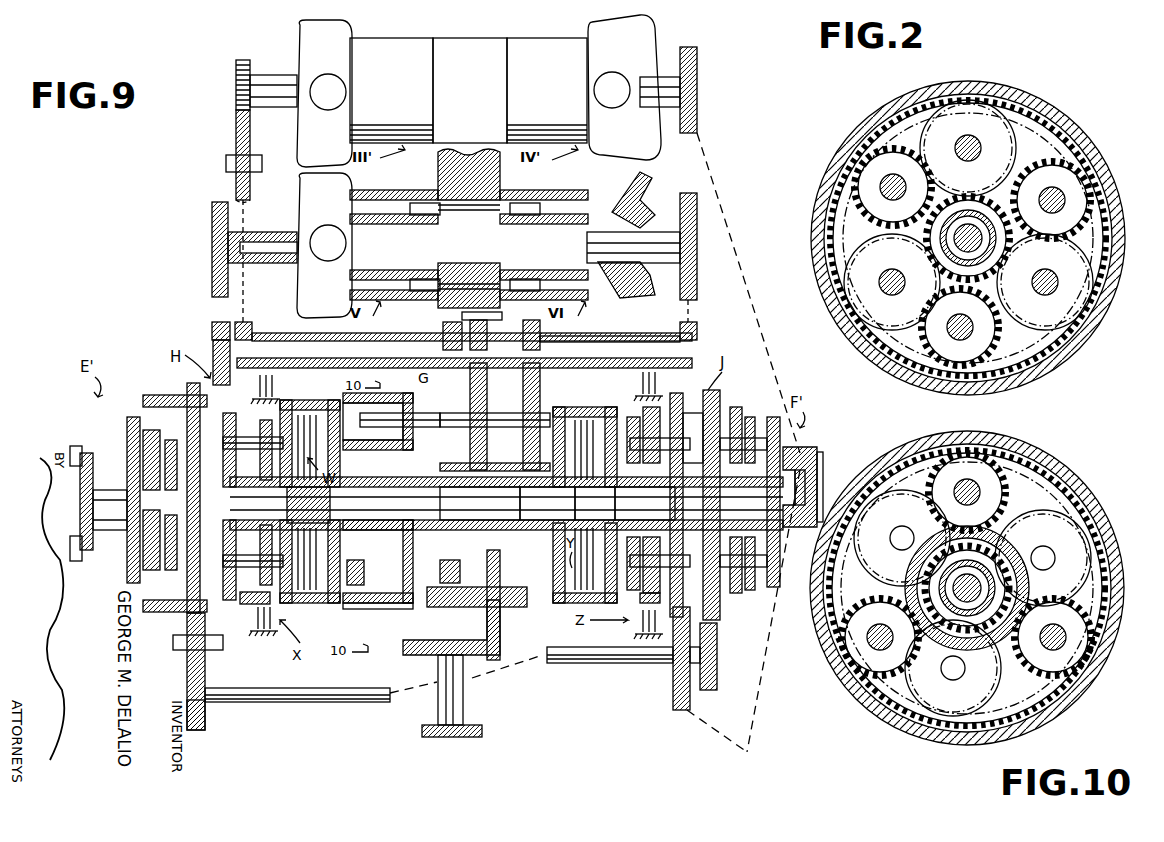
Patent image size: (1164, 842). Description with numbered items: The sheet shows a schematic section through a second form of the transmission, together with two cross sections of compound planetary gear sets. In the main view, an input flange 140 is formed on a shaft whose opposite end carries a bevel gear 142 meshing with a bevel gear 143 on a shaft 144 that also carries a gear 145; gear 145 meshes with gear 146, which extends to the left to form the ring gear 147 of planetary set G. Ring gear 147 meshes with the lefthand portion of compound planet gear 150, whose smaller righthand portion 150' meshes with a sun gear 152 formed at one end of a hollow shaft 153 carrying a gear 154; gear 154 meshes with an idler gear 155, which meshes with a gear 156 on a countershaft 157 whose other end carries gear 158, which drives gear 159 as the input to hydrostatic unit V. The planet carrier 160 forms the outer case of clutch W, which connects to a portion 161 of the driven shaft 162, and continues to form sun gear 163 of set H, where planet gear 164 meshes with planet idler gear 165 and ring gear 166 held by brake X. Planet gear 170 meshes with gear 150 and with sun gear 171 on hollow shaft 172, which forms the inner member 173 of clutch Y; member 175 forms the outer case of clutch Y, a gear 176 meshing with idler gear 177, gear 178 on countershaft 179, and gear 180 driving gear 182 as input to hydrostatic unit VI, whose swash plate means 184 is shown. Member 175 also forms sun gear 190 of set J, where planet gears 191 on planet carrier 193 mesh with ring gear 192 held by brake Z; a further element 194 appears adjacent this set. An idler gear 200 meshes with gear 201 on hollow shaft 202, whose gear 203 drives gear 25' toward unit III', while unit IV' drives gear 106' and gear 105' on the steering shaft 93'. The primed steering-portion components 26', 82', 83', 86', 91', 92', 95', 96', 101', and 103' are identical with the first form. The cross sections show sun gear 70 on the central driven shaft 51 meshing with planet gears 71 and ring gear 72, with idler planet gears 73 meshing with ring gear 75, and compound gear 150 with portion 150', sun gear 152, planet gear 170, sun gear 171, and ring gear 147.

In FIG. 9, the gear 26' is at (243, 71).
In FIG. 9, the gear 25' is at (225, 156).
In FIG. 9, the gear 106' is at (694, 90).
In FIG. 9, the gear 159 is at (212, 240).
In FIG. 9, the gear 182 is at (697, 255).
In FIG. 9, the swash plate means 184 is at (620, 283).
In FIG. 9, the gear 158 is at (212, 330).
In FIG. 9, the gear 203 is at (252, 325).
In FIG. 9, the countershaft 157 is at (320, 335).
In FIG. 9, the hollow shaft 202 is at (382, 333).
In FIG. 9, the gear 201 is at (480, 318).
In FIG. 9, the gear 156 is at (493, 335).
In FIG. 9, the gear 178 is at (540, 333).
In FIG. 9, the countershaft 179 is at (605, 340).
In FIG. 9, the gear 180 is at (697, 330).
In FIG. 9, the hollow shaft 153 is at (427, 478).
In FIG. 9, the driven shaft 162 is at (480, 503).
In FIG. 9, the hollow shaft 172 is at (547, 503).
In FIG. 9, the inner member of clutch Y 173 is at (595, 503).
In FIG. 9, the sun gear 190 is at (645, 503).
In FIG. 9, the end plate 96' is at (735, 502).
In FIG. 9, the output coupling 101' is at (809, 475).
In FIG. 9, the output shaft end 95' is at (840, 478).
In FIG. 9, the clutch plate 86' is at (124, 500).
In FIG. 9, the input shaft 83' is at (104, 501).
In FIG. 9, the shaft end 82' is at (91, 509).
In FIG. 9, the planet idler gear 165 is at (228, 418).
In FIG. 9, the sun gear 163 is at (258, 455).
In FIG. 9, the planet gear 164 is at (238, 540).
In FIG. 9, the ring gear 166 is at (240, 597).
In FIG. 9, the planet carrier 160 is at (300, 402).
In FIG. 9, the planet gear 170 is at (350, 545).
In FIG. 10, the planet gear 170 is at (1072, 558).
In FIG. 9, the portion of driven shaft 161 is at (324, 505).
In FIG. 9, the sun gear 171 is at (365, 520).
In FIG. 10, the sun gear 171 is at (905, 588).
In FIG. 9, the compound planet gear 150 is at (364, 413).
In FIG. 10, the compound planet gear 150 is at (987, 598).
In FIG. 9, the smaller righthand portion of compound planet gear 150' is at (398, 414).
In FIG. 10, the smaller righthand portion of compound planet gear 150' is at (902, 534).
In FIG. 9, the idler gear 200 is at (400, 428).
In FIG. 9, the sun gear 152 is at (378, 581).
In FIG. 10, the sun gear 152 is at (1020, 535).
In FIG. 9, the ring gear 147 is at (350, 606).
In FIG. 10, the ring gear 147 is at (1025, 448).
In FIG. 9, the idler gear 155 is at (487, 382).
In FIG. 9, the gear 176 is at (520, 455).
In FIG. 9, the gear 154 is at (495, 471).
In FIG. 9, the idler gear 177 is at (540, 388).
In FIG. 9, the member 175 is at (575, 407).
In FIG. 9, the clutch plate 194 is at (660, 425).
In FIG. 9, the planet carrier 193 is at (683, 462).
In FIG. 9, the planet gears 191 is at (665, 545).
In FIG. 9, the ring gear 192 is at (660, 596).
In FIG. 9, the gear 146 is at (460, 565).
In FIG. 9, the gear 145 is at (450, 608).
In FIG. 9, the shaft 144 is at (500, 612).
In FIG. 9, the bevel gear 143 is at (500, 642).
In FIG. 9, the bevel gear 142 is at (466, 672).
In FIG. 9, the input flange 140 is at (482, 735).
In FIG. 9, the shaft 91' is at (215, 671).
In FIG. 9, the shaft end 92' is at (218, 719).
In FIG. 9, the steering shaft 93' is at (439, 687).
In FIG. 9, the gear 105' is at (651, 658).
In FIG. 9, the gear 103' is at (721, 656).
In FIG. 2, the ring gear 72 is at (1075, 150).
In FIG. 2, the planet gears 71 is at (1000, 108).
In FIG. 2, the ring gear 75 is at (1090, 233).
In FIG. 2, the idler planet gears 73 is at (860, 170).
In FIG. 2, the sun gear 70 is at (985, 272).
In FIG. 2, the central driven shaft 51 is at (950, 245).